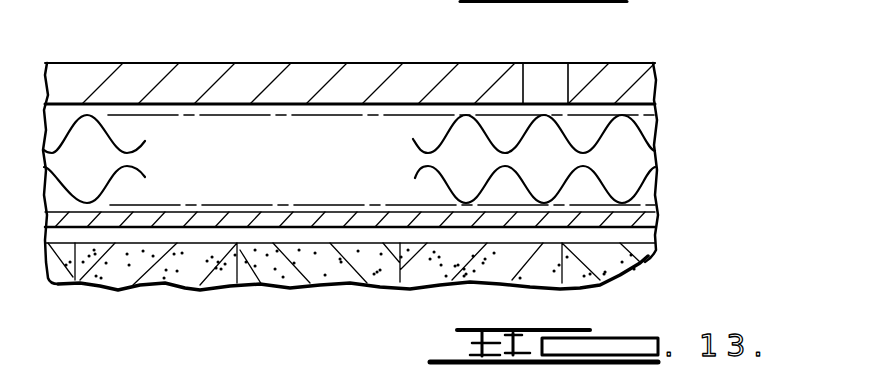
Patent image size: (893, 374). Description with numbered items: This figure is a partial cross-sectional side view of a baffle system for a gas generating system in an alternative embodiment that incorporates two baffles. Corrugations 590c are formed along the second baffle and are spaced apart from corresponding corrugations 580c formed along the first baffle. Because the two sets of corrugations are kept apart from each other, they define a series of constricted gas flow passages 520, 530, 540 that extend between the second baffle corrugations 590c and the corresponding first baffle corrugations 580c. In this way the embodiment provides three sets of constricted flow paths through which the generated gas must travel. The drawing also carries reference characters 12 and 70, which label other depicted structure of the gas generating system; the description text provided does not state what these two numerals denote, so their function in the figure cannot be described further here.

The insulation assembly 12 is at (315, 64).
The adhesive layer 70 is at (124, 224).
The constricted gas flow passage 540 is at (623, 108).
The constricted gas flow passage 530 is at (587, 160).
The constricted gas flow passage 520 is at (623, 207).
The second baffle corrugations 590c is at (583, 152).
The first baffle corrugations 580c is at (505, 168).